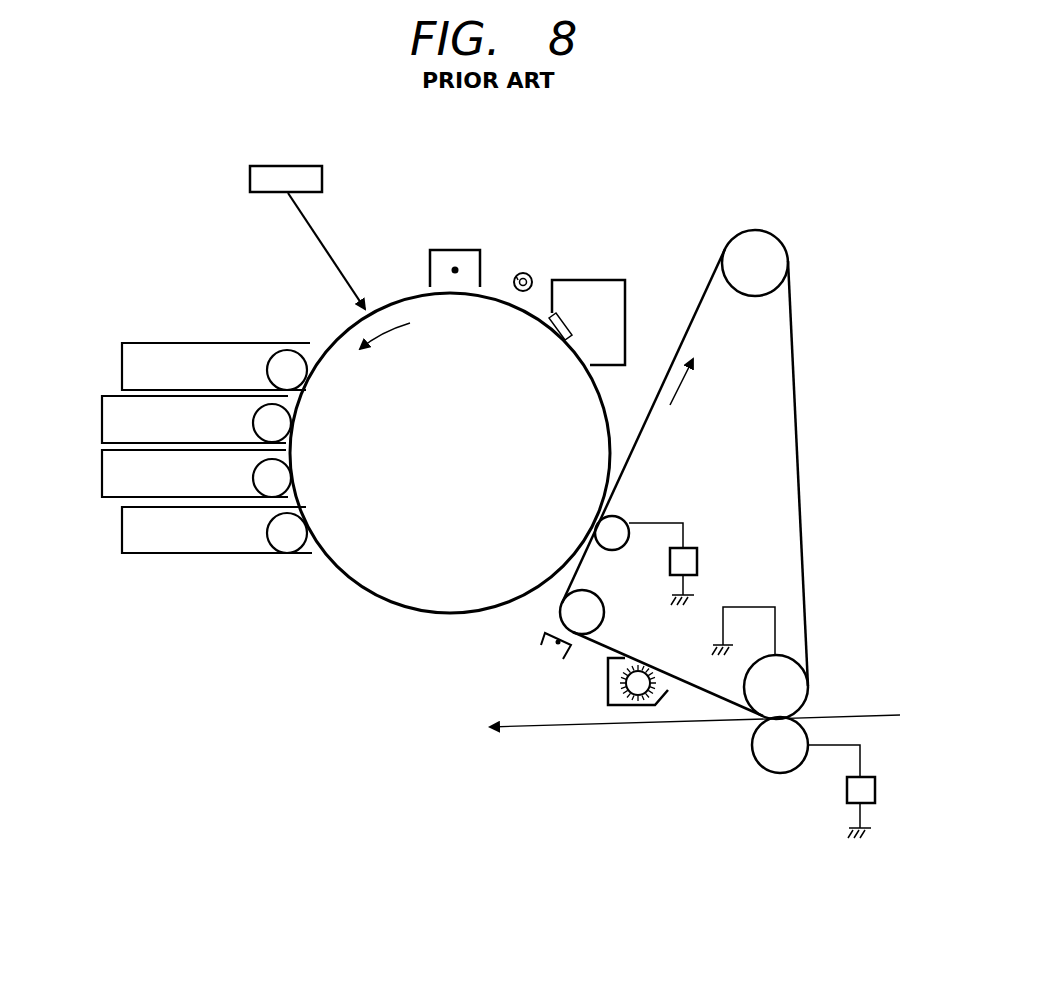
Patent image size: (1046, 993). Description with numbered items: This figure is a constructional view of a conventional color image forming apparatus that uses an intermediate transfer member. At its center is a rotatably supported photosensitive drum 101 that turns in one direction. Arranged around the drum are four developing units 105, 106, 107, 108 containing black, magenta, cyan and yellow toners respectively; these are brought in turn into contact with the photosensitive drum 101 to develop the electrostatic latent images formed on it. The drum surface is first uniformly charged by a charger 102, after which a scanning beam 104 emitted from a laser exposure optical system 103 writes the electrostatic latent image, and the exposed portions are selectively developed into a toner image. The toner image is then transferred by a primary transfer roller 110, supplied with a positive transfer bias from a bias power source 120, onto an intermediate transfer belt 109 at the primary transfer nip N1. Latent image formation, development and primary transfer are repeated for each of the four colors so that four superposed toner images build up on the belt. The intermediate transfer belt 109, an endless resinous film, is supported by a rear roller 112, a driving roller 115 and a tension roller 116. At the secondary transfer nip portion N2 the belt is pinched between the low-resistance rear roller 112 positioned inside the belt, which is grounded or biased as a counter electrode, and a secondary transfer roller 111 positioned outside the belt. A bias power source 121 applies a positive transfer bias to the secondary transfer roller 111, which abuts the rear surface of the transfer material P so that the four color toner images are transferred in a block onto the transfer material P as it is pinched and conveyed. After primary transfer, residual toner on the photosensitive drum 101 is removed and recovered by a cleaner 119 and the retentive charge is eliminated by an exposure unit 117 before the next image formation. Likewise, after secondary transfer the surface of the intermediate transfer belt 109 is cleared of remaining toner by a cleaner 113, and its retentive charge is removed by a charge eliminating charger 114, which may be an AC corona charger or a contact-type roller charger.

The photosensitive drum 101 is at (360, 595).
The charger 102 is at (482, 232).
The laser exposure optical system 103 is at (322, 179).
The scanning beam 104 is at (325, 249).
The developing unit 105 is at (122, 356).
The developing unit 106 is at (102, 410).
The developing unit 107 is at (102, 463).
The developing unit 108 is at (122, 520).
The intermediate transfer belt 109 is at (797, 412).
The primary transfer roller 110 is at (622, 519).
The secondary transfer roller 111 is at (760, 762).
The rear roller 112 is at (800, 660).
The cleaner 113 is at (607, 688).
The charge eliminating charger 114 is at (538, 649).
The driving roller 115 is at (757, 296).
The tension roller 116 is at (596, 597).
The exposure unit 117 is at (530, 277).
The cleaner 119 is at (598, 280).
The bias power source 120 is at (697, 561).
The bias power source 121 is at (875, 790).
The primary transfer nip N1 is at (596, 526).
The secondary transfer nip portion N2 is at (806, 716).
The transfer material P is at (570, 727).